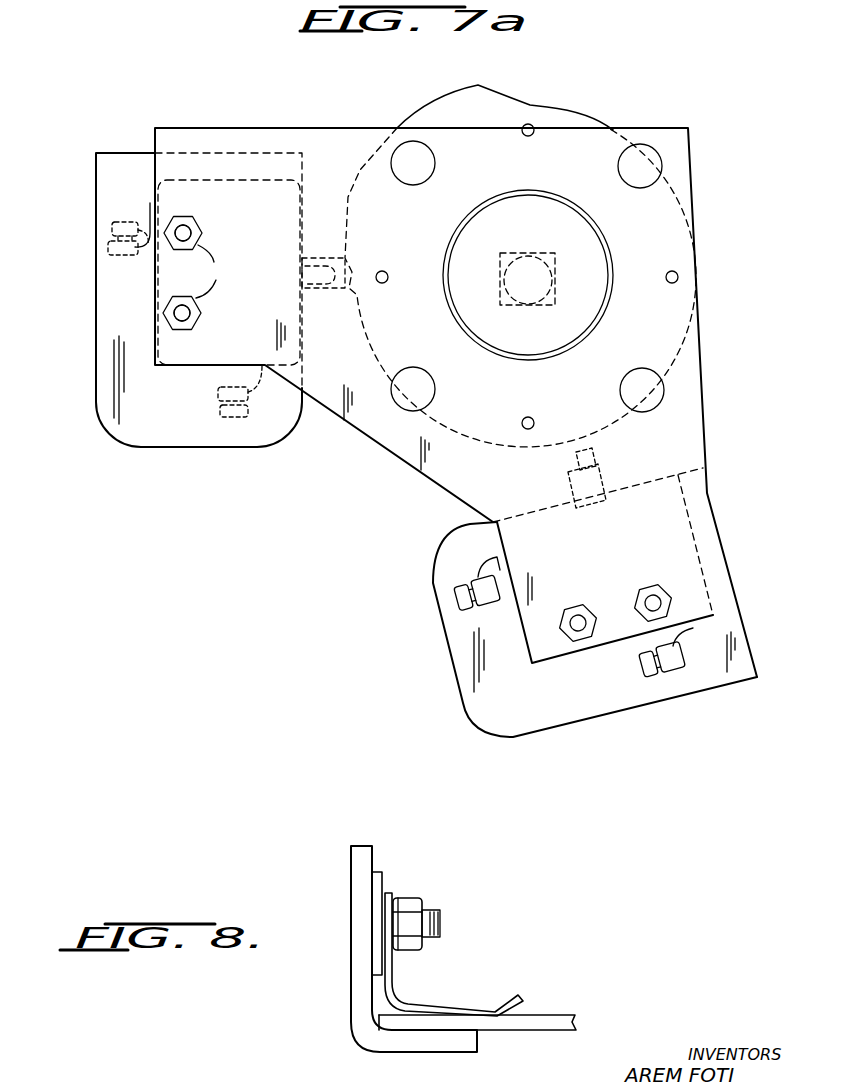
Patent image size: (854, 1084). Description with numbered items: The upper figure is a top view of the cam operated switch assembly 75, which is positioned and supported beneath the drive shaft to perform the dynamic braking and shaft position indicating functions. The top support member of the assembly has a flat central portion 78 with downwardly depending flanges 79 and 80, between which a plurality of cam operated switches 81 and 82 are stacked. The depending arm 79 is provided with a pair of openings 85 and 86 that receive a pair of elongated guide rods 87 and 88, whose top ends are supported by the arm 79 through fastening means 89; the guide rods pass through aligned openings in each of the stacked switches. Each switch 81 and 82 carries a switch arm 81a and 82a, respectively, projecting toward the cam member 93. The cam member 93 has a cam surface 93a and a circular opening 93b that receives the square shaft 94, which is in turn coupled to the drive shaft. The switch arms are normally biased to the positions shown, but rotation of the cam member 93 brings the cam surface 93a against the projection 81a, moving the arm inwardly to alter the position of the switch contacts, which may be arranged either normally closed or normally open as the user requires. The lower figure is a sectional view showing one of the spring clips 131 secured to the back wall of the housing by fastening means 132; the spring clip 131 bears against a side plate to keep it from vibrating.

In FIG. 7A, the cam operated switch assembly 75 is at (372, 443).
In FIG. 7A, the flat central portion 78 is at (483, 484).
In FIG. 7A, the depending flange 79 is at (296, 250).
In FIG. 7A, the depending flange 80 is at (613, 560).
In FIG. 7A, the cam operated switch 81 is at (178, 420).
In FIG. 7A, the switch arm 81a is at (315, 290).
In FIG. 7A, the cam operated switch 82 is at (532, 706).
In FIG. 7A, the switch arm 82a is at (598, 474).
In FIG. 7A, the opening 85 is at (180, 251).
In FIG. 7A, the opening 86 is at (168, 313).
In FIG. 7A, the guide rod 87 is at (190, 231).
In FIG. 7A, the guide rod 88 is at (190, 313).
In FIG. 7A, the fastening means 89 is at (222, 271).
In FIG. 7A, the cam member 93 is at (500, 176).
In FIG. 7A, the cam surface 93a is at (372, 152).
In FIG. 7A, the circular opening 93b is at (461, 312).
In FIG. 7A, the square shaft 94 is at (547, 258).
In FIG. 8, the spring clip 131 is at (437, 1005).
In FIG. 8, the fastening means 132 is at (441, 924).